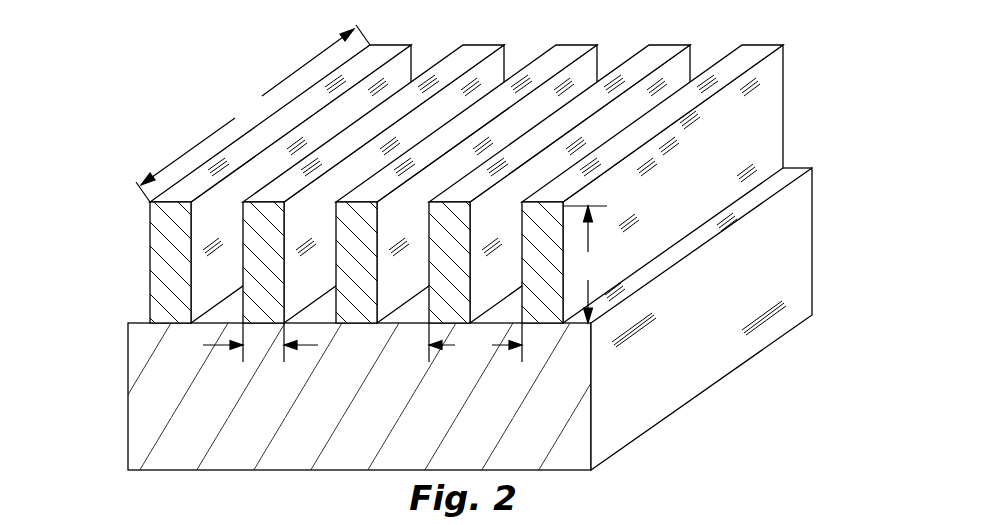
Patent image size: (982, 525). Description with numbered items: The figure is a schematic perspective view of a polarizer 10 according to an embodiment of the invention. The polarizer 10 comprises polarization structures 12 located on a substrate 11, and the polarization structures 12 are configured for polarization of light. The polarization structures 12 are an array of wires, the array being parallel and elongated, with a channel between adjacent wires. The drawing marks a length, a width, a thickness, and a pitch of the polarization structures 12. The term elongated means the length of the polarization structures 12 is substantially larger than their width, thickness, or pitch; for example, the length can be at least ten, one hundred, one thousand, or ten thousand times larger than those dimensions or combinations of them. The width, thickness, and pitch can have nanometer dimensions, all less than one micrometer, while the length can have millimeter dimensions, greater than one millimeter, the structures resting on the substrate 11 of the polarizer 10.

The polarizer 10 is at (419, 247).
The substrate 11 is at (470, 319).
The polarization structures 12 is at (45, 263).